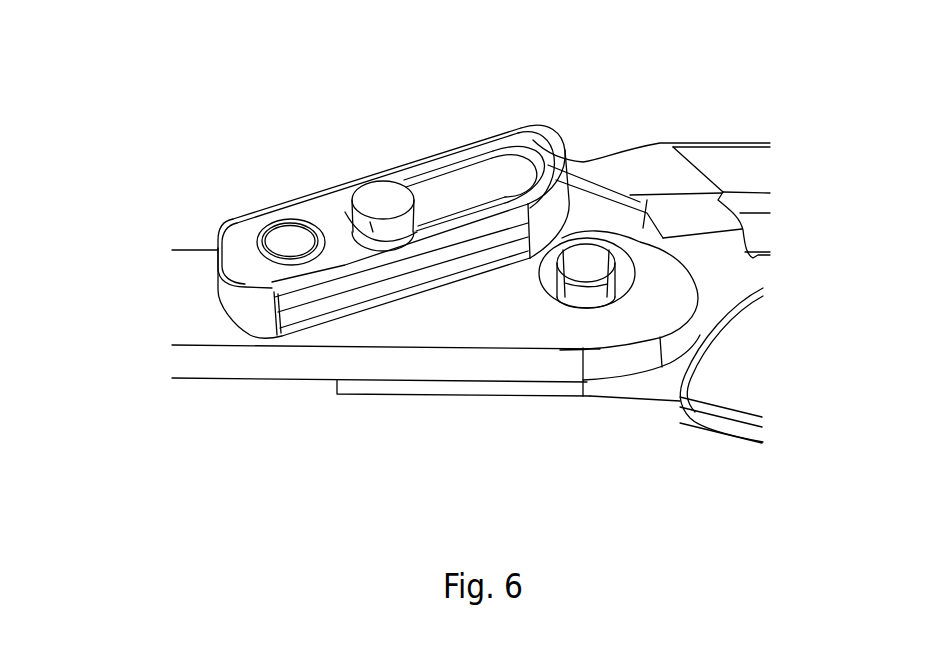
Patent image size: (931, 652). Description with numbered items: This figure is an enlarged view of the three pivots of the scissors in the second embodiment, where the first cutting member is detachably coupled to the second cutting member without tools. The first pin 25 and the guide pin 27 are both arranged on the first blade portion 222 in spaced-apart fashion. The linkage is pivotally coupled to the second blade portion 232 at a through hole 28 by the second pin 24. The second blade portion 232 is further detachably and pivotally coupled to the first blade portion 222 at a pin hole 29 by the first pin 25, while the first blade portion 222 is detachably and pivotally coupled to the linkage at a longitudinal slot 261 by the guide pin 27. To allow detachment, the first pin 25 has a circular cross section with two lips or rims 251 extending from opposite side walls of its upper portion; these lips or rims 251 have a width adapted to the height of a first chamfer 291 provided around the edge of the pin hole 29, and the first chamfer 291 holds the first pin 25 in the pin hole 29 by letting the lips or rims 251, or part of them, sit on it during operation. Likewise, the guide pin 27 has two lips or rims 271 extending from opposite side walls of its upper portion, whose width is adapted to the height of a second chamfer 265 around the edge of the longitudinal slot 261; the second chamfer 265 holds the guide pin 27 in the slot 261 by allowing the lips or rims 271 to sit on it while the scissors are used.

The second pin 24 is at (287, 237).
The first pin 25 is at (586, 262).
The guide pin 27 is at (388, 192).
The through hole 28 is at (263, 252).
The pin hole 29 is at (549, 292).
The first blade portion 222 is at (402, 395).
The second blade portion 232 is at (185, 290).
The lips or rims 251 is at (592, 258).
The longitudinal slot 261 is at (443, 195).
The second chamfer 265 is at (478, 157).
The lips or rims 271 is at (356, 180).
The first chamfer 291 is at (640, 286).